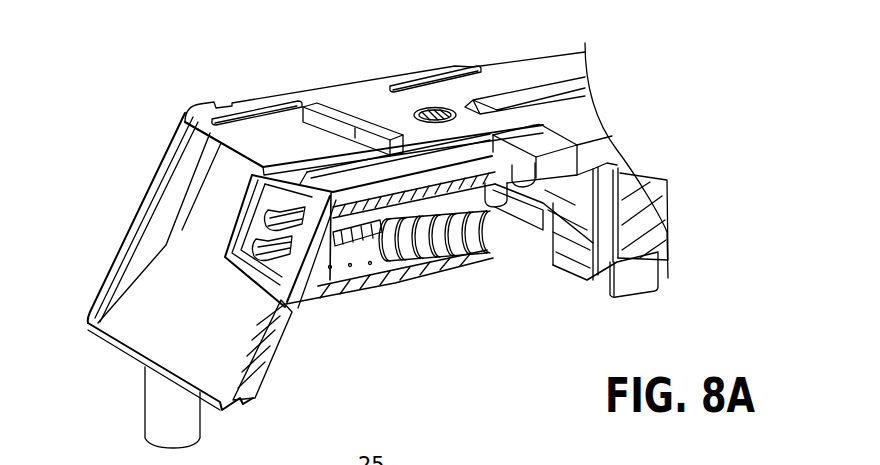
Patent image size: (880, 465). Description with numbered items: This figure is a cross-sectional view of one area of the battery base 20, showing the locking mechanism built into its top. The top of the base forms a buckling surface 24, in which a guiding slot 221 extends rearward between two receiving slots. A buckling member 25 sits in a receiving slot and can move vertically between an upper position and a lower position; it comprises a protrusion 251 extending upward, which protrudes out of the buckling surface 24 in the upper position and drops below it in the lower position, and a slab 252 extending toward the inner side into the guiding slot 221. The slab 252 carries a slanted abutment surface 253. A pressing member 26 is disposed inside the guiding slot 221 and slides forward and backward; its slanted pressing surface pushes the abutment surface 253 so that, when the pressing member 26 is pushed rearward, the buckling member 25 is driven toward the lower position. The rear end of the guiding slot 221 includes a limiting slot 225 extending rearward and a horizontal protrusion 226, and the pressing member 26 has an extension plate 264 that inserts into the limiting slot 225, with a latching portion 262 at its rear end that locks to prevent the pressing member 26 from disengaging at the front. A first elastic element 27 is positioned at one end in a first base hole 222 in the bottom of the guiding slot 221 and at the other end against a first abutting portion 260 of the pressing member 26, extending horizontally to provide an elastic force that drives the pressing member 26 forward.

The battery base 20 is at (270, 337).
The buckling surface 24 is at (258, 126).
The buckling member 25 is at (443, 36).
The protrusion 251 is at (305, 108).
The slab 252 is at (436, 108).
The abutment surface 253 is at (392, 210).
The pressing member 26 is at (255, 191).
The first abutting portion 260 is at (265, 252).
The latching portion 262 is at (545, 158).
The extension plate 264 is at (491, 165).
The first elastic element 27 is at (392, 266).
The guiding slot 221 is at (353, 290).
The first base hole 222 is at (440, 245).
The horizontal protrusion 226 is at (518, 190).
The limiting slot 225 is at (548, 158).